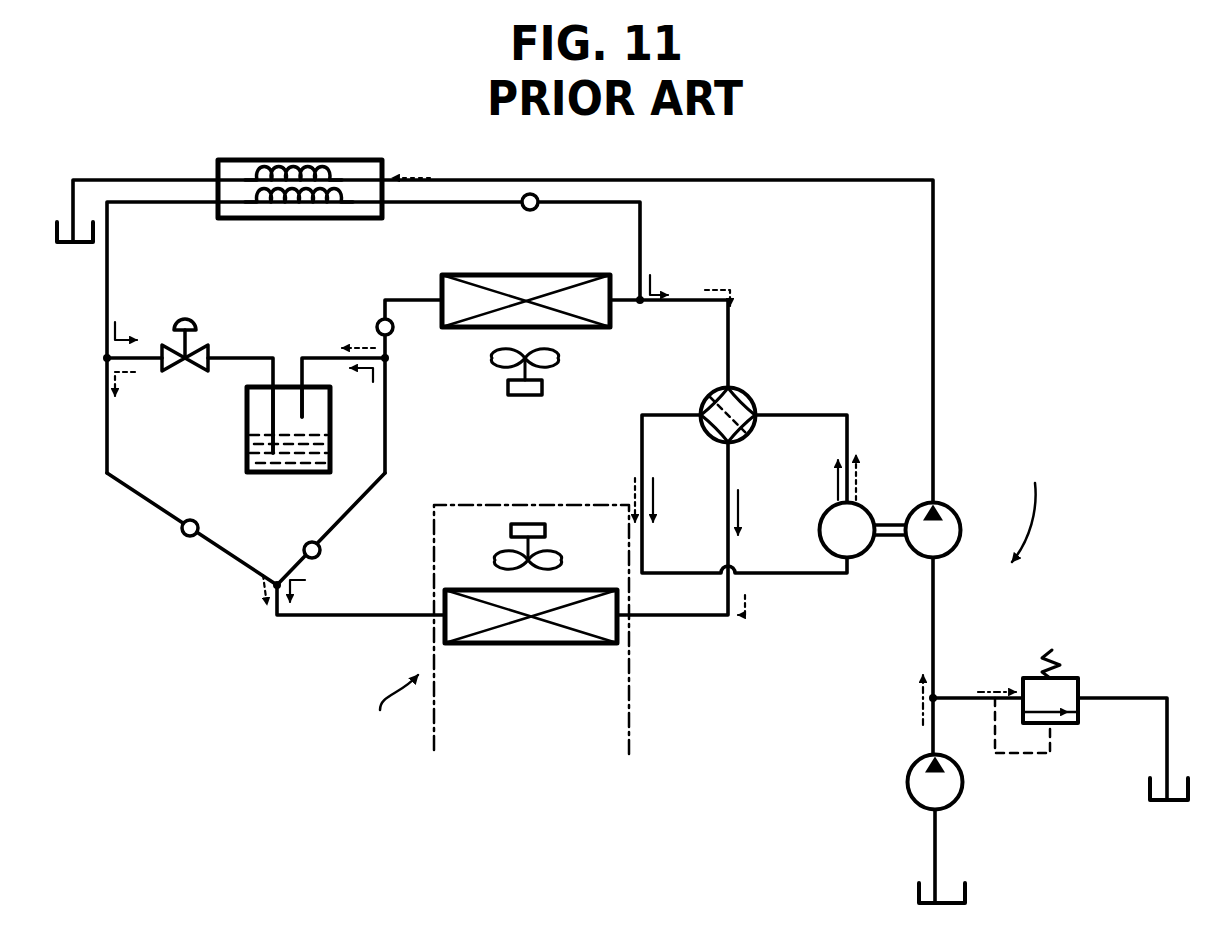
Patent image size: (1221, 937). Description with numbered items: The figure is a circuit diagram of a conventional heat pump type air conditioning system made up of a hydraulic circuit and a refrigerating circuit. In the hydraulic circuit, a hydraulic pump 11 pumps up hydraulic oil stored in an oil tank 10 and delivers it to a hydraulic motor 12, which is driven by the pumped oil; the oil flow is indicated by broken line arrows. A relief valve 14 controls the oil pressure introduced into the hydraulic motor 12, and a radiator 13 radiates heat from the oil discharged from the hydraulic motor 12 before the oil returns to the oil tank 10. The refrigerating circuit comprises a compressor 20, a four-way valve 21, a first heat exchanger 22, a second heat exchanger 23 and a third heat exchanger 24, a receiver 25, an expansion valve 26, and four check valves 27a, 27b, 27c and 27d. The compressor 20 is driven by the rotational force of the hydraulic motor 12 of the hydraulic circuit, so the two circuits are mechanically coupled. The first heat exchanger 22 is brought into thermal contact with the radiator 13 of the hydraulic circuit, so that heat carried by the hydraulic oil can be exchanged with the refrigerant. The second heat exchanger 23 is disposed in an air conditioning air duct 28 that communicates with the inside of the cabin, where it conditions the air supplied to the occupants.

The oil tank 10 is at (67, 244).
The hydraulic pump 11 is at (962, 785).
The hydraulic motor 12 is at (961, 530).
The radiator 13 is at (300, 174).
The relief valve 14 is at (1070, 676).
The compressor 20 is at (895, 494).
The four-way valve 21 is at (753, 400).
The first heat exchanger 22 is at (318, 212).
The second heat exchanger 23 is at (585, 645).
The heat exchanger 24 is at (598, 330).
The receiver 25 is at (271, 474).
The expansion valve 26 is at (186, 318).
The check valve 27a is at (318, 558).
The check valve 27b is at (530, 211).
The check valve 27c is at (377, 321).
The check valve 27d is at (183, 536).
The air conditioning air duct 28 is at (630, 712).